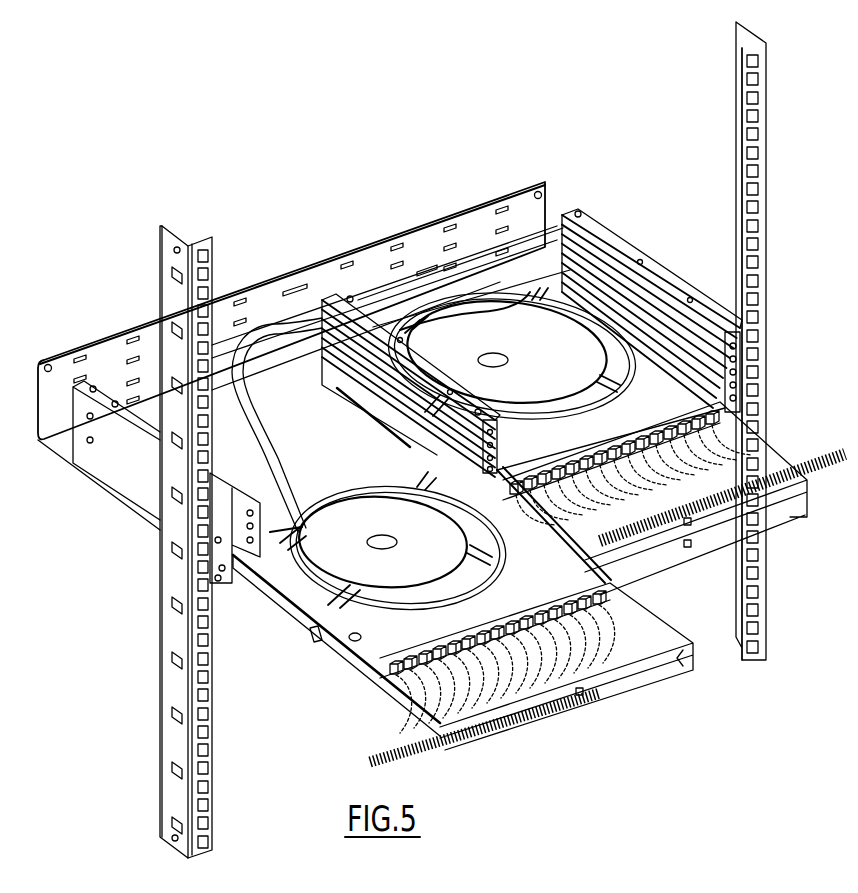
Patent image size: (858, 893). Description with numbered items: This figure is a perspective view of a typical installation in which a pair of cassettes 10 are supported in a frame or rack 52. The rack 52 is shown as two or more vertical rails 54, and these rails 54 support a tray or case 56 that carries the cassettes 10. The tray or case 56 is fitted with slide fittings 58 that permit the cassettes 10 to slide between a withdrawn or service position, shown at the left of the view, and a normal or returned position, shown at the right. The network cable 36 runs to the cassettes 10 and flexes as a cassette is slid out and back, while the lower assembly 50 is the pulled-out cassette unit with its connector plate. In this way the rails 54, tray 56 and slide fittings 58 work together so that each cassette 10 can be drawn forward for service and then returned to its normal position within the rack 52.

The cassette 10 is at (400, 332).
The cable 36 is at (477, 268).
The patch panel tray 50 is at (612, 583).
The frame or rack 52 is at (212, 697).
The vertical rail 54 is at (210, 276).
The tray or case 56 is at (228, 590).
The slide fitting 58 is at (345, 310).